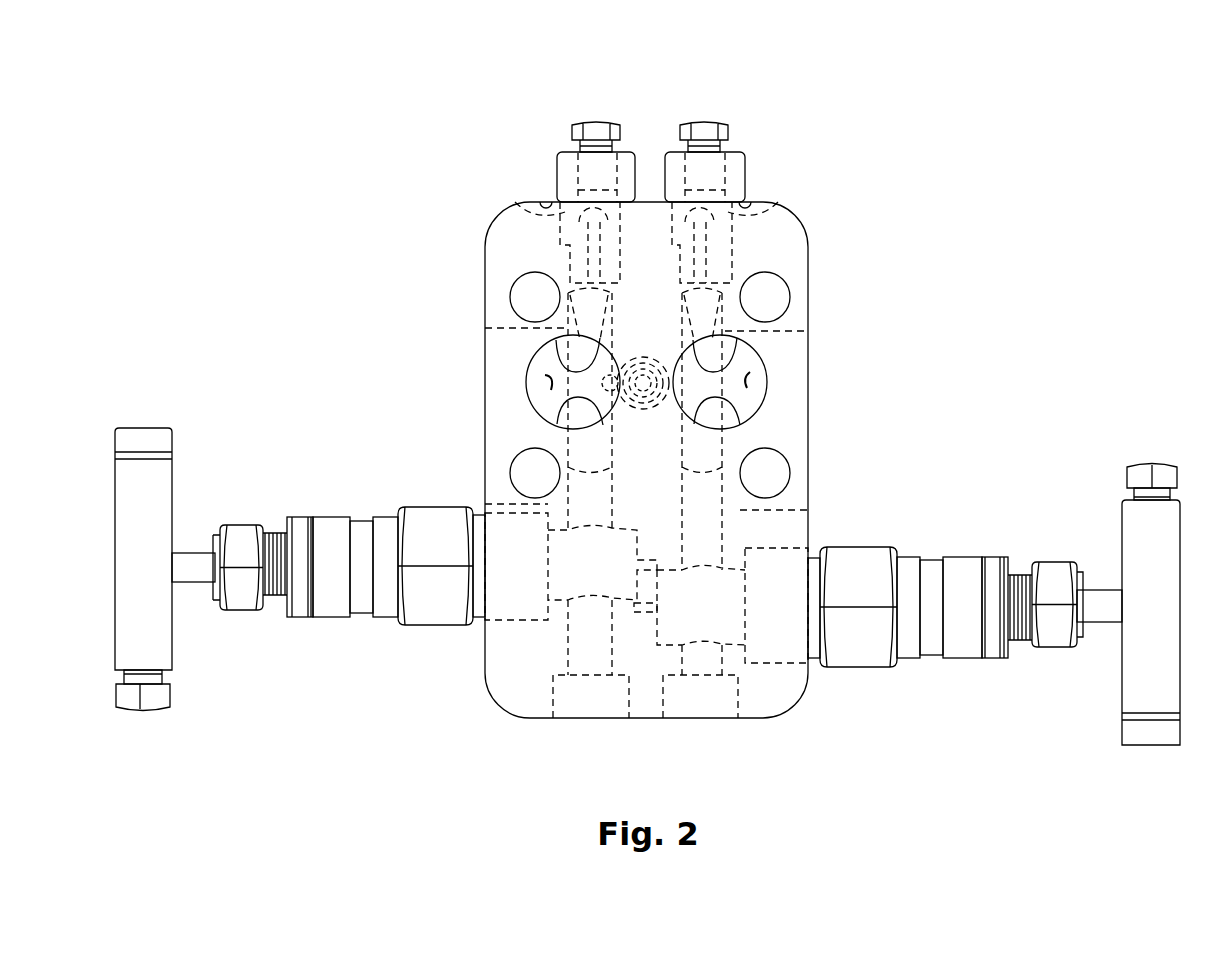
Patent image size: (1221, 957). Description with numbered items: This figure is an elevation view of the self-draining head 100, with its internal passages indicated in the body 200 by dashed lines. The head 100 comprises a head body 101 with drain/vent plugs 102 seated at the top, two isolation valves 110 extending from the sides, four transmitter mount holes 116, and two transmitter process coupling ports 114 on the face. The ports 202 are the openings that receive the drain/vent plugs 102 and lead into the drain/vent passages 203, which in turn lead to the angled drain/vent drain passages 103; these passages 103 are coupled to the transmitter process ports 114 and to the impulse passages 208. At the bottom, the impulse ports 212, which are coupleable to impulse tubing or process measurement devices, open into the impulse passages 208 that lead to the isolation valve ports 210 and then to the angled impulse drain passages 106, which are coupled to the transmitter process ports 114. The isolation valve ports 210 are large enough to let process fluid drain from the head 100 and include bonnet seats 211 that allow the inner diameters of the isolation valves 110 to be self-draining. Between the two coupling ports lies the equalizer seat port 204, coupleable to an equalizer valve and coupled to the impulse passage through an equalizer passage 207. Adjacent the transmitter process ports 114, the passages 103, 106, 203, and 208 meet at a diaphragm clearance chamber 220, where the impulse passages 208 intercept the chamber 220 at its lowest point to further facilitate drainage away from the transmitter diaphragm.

The self-draining head 100 is at (918, 190).
The head body 101 is at (805, 226).
The drain/vent plugs 102 is at (687, 122).
The internal drain/vent drain passages 103 is at (740, 332).
The impulse drain passages 106 is at (748, 420).
The isolation valves 110 is at (1152, 462).
The transmitter process coupling ports 114 is at (766, 402).
The transmitter mount holes 116 is at (790, 470).
The body 200 is at (808, 366).
The ports 202 is at (744, 205).
The drain/vent passages 203 is at (778, 203).
The equalizer seat port 204 is at (641, 355).
The equalizer passage 207 is at (612, 393).
The impulse passages 208 is at (740, 510).
The isolation valve ports 210 is at (505, 628).
The bonnet seats 211 is at (737, 650).
The impulse ports 212 is at (615, 720).
The diaphragm clearance chamber 220 is at (748, 380).